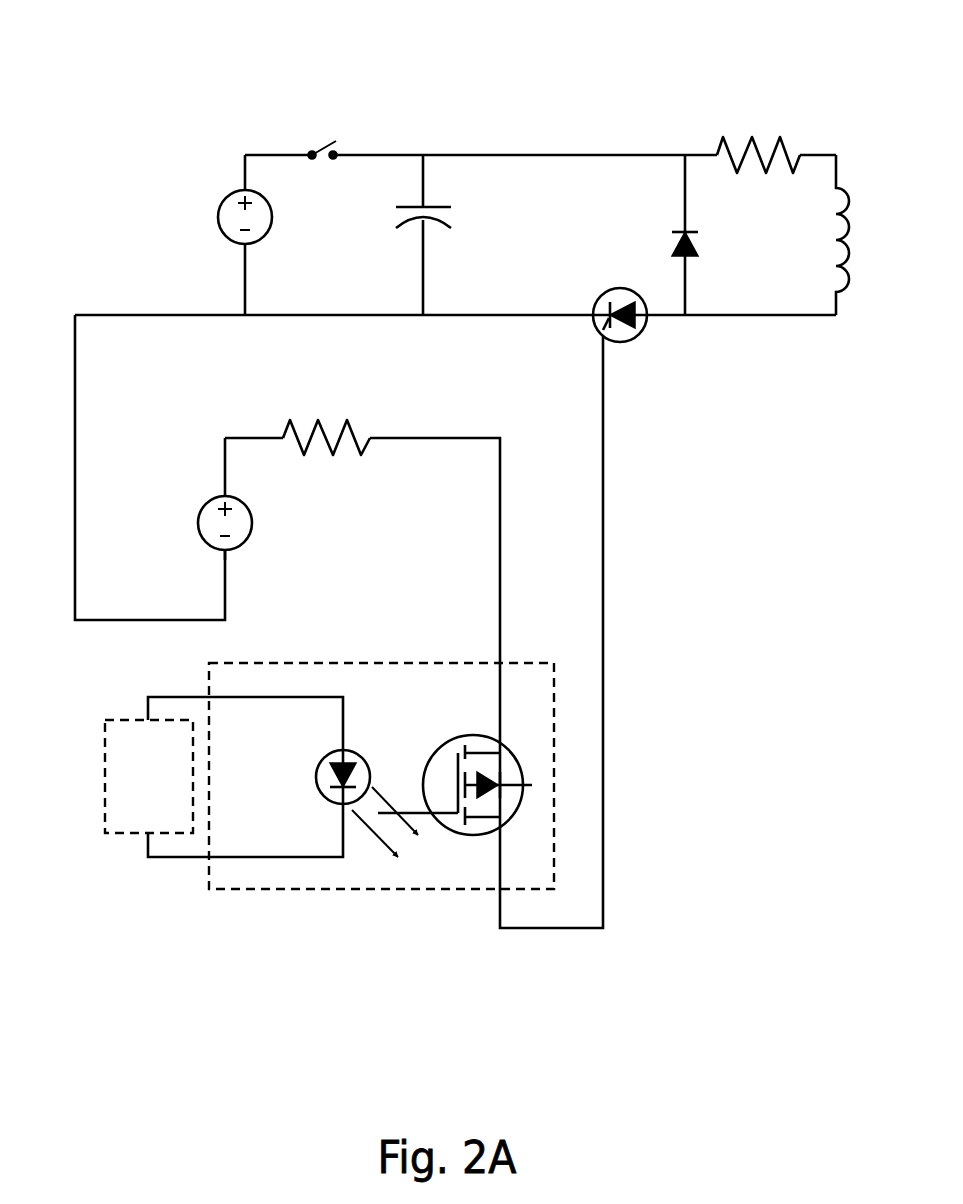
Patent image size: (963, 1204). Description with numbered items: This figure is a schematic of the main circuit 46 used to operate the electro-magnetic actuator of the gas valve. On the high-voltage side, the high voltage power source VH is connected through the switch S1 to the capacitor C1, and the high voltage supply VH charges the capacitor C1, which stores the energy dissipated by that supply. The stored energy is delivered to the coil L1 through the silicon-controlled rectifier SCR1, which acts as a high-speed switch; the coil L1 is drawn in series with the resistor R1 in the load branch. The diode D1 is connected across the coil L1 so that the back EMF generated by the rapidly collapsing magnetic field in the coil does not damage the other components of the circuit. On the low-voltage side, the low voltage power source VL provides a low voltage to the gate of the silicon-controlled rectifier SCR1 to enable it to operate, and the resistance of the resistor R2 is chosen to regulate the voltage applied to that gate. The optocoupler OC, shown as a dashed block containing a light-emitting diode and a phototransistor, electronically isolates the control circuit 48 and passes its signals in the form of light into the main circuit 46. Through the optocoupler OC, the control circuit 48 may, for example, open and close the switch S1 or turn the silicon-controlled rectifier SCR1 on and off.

The main circuit 46 is at (93, 88).
The control circuit 48 is at (83, 849).
The switch S1 is at (323, 126).
The high voltage power source VH is at (268, 235).
The capacitor C1 is at (449, 235).
The resistor R1 is at (758, 135).
The coil L1 is at (864, 235).
The diode D1 is at (710, 235).
The silicon-controlled rectifier SCR1 is at (672, 334).
The resistor R2 is at (326, 413).
The low voltage power source VL is at (202, 499).
The optocoupler OC is at (345, 900).